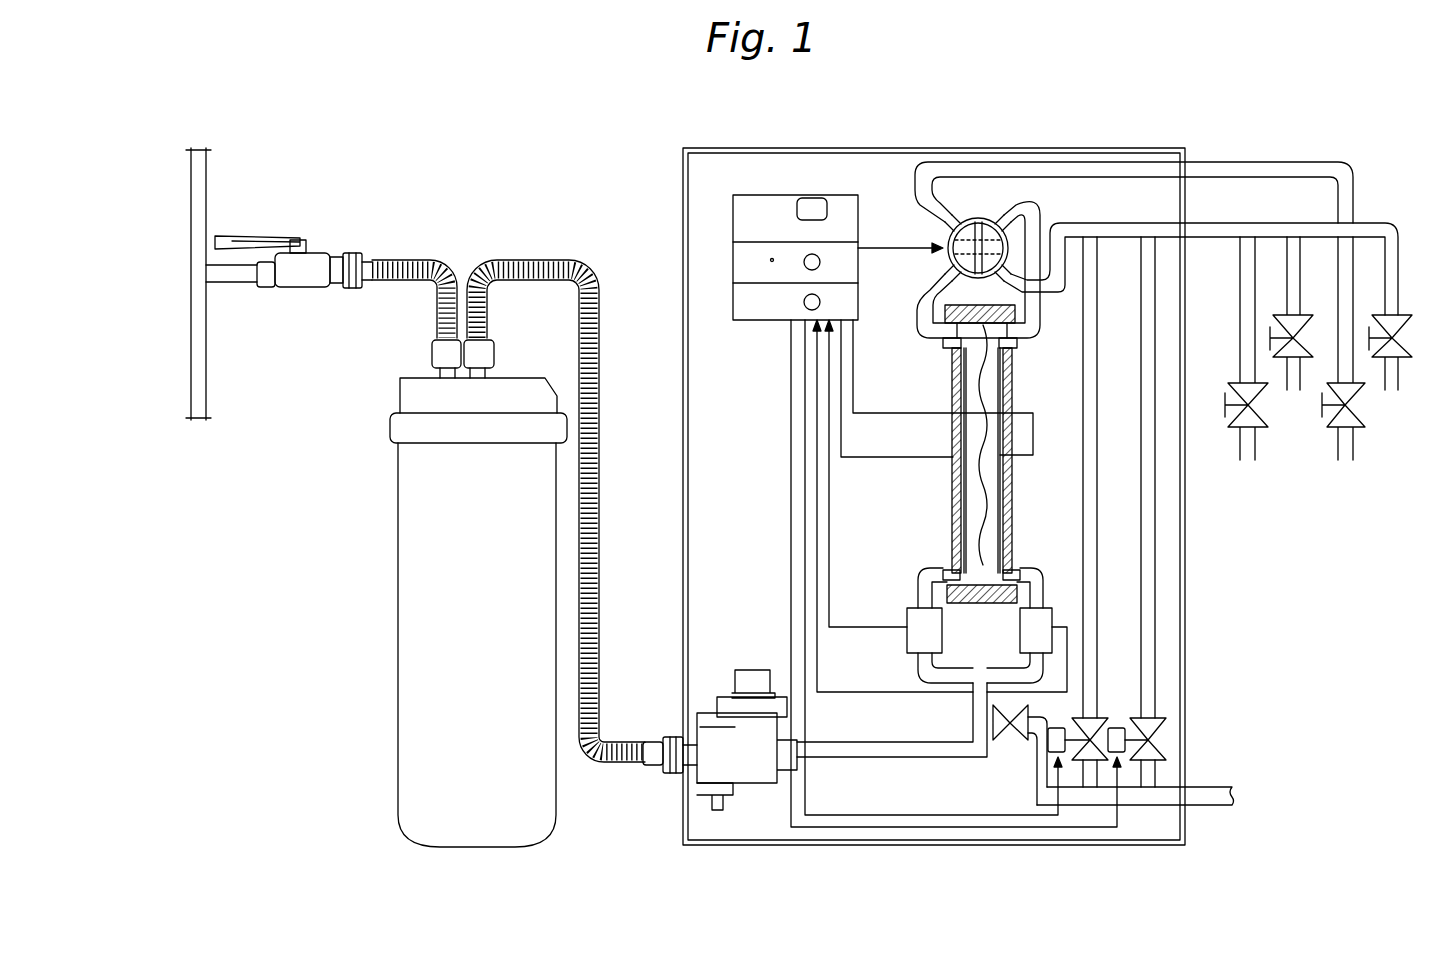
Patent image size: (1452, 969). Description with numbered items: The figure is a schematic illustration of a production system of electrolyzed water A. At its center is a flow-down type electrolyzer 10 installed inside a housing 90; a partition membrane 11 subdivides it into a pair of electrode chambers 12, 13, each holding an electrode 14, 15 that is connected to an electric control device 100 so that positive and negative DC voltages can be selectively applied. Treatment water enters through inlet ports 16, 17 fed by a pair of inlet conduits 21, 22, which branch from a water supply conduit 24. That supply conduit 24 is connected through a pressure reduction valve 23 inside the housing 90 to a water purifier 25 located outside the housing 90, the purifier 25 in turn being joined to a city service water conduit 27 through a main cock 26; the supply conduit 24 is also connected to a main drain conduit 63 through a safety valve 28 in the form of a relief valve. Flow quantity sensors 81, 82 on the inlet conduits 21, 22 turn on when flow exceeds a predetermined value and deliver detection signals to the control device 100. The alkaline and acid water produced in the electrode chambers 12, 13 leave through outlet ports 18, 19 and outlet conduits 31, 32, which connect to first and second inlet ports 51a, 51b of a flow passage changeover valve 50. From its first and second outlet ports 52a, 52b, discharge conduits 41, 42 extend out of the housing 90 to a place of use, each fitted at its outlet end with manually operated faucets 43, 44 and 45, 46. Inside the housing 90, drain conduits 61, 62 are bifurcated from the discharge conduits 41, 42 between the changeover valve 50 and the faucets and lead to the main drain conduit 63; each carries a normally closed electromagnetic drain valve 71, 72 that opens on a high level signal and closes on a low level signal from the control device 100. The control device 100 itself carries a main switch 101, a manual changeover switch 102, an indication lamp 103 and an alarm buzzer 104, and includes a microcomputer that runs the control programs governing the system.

The electrolyzer 10 is at (976, 454).
The partition membrane 11 is at (987, 395).
The electrode chamber 12 is at (965, 497).
The electrode chamber 13 is at (1000, 497).
The electrode 14 is at (960, 440).
The electrode 15 is at (1005, 437).
The inlet port 16 is at (948, 570).
The inlet port 17 is at (1012, 570).
The outlet port 18 is at (945, 349).
The outlet port 19 is at (1010, 349).
The inlet conduit 21 is at (920, 592).
The inlet conduit 22 is at (1040, 586).
The pressure reduction valve 23 is at (752, 780).
The water supply conduit 24 is at (888, 758).
The water purifier 25 is at (406, 550).
The main cock 26 is at (302, 240).
The city service water conduit 27 is at (206, 194).
The safety valve 28 is at (1012, 735).
The outlet conduit 31 is at (918, 328).
The outlet conduit 32 is at (1040, 328).
The discharge conduit 41 is at (1205, 162).
The discharge conduit 42 is at (1198, 223).
The faucet 43 is at (1261, 408).
The faucet 44 is at (1361, 408).
The faucet 45 is at (1300, 330).
The faucet 46 is at (1402, 330).
The flow passage changeover valve 50 is at (990, 243).
The first inlet port 51a is at (956, 277).
The second inlet port 51b is at (1010, 218).
The first outlet port 52a is at (942, 222).
The second outlet port 52b is at (1010, 250).
The drain conduit 61 is at (1095, 538).
The drain conduit 62 is at (1141, 605).
The main drain conduit 63 is at (1135, 800).
The drain valve 71 is at (1094, 726).
The drain valve 72 is at (1152, 726).
The flow quantity sensor 81 is at (912, 638).
The flow quantity sensor 82 is at (1022, 640).
The housing 90 is at (893, 148).
The electric control device 100 is at (906, 495).
The main switch 101 is at (827, 207).
The manual changeover switch 102 is at (820, 262).
The indication lamp 103 is at (770, 260).
The alarm buzzer 104 is at (820, 302).
The production system of electrolyzed water A is at (934, 470).